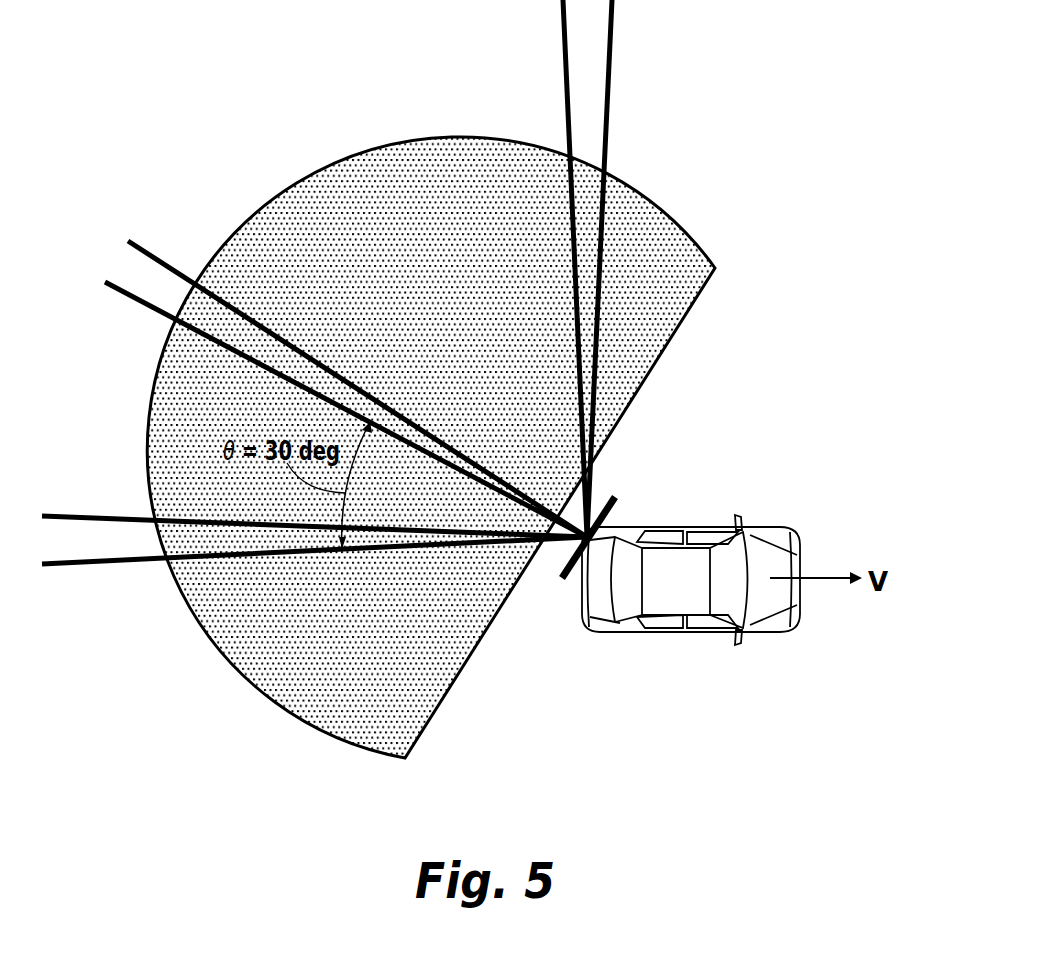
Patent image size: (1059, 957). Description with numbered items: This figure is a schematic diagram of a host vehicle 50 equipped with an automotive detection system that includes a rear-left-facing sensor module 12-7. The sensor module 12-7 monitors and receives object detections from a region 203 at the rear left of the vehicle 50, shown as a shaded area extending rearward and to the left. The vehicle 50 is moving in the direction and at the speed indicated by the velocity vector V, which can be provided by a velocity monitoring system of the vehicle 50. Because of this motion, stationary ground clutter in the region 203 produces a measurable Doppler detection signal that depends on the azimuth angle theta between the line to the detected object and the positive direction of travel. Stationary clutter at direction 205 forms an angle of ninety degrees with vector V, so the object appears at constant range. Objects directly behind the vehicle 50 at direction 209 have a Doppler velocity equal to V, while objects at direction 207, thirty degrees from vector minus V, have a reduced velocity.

The region 203 is at (642, 273).
The direction 205 is at (584, 30).
The direction 207 is at (213, 324).
The direction 209 is at (138, 545).
The rear-left-facing sensor module 12-7 is at (560, 583).
The host vehicle 50 is at (694, 632).